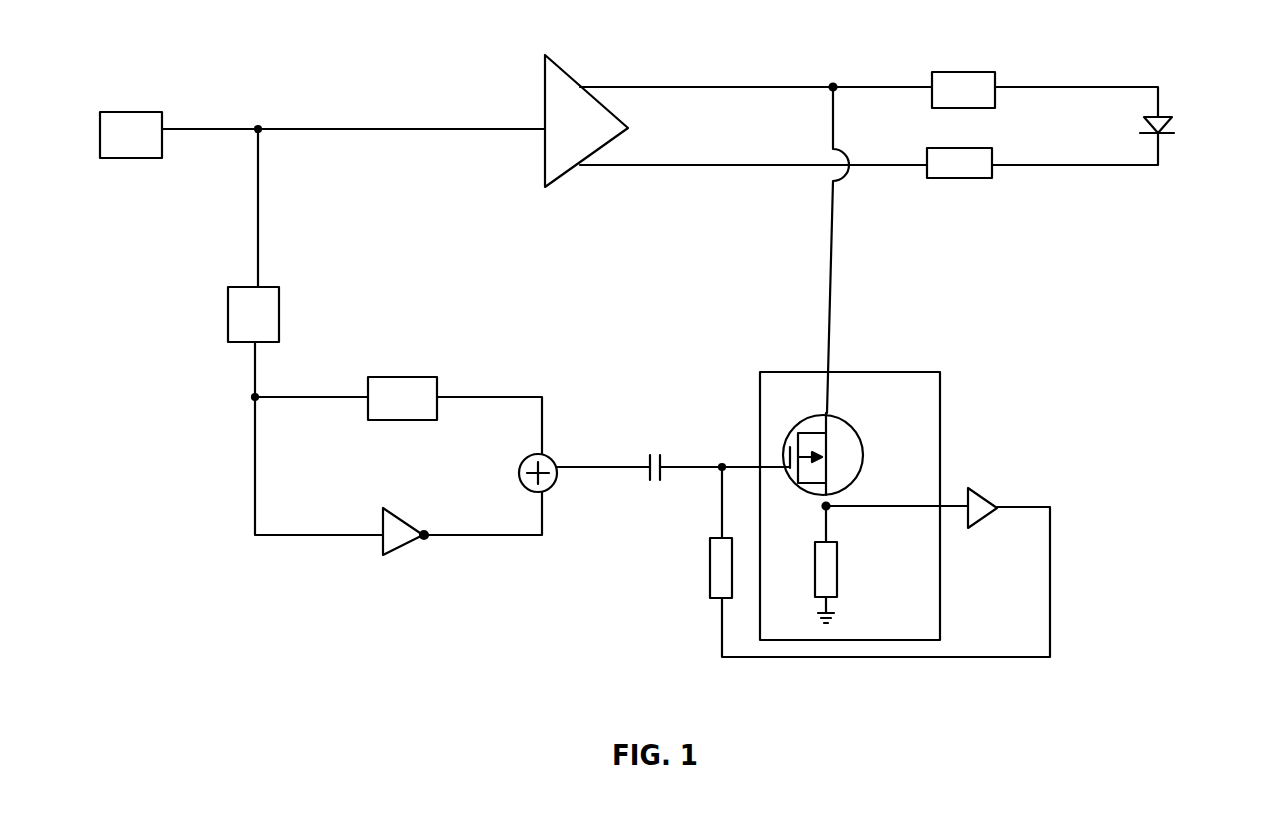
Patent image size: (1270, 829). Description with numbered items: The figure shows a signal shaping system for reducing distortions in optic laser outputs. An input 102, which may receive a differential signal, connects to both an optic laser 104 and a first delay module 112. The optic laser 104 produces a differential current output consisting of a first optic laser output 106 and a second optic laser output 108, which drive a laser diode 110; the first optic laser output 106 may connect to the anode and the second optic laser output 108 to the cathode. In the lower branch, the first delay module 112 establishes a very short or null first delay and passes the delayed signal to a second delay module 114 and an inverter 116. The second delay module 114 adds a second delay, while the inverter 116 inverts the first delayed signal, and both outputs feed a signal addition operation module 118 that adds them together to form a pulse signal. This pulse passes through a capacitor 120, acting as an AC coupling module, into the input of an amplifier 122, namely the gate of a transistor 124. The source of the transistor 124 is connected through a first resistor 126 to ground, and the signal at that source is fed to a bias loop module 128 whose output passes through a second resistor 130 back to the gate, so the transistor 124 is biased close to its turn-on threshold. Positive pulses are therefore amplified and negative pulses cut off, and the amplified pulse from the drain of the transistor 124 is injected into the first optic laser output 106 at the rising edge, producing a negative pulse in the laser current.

The input 102 is at (140, 112).
The optic laser 104 is at (573, 75).
The first optic laser output 106 is at (980, 72).
The second optic laser output 108 is at (965, 178).
The laser diode 110 is at (1160, 118).
The first delay module 112 is at (279, 318).
The second delay module 114 is at (405, 377).
The inverter 116 is at (405, 547).
The signal addition operation module 118 is at (551, 459).
The capacitor 120 is at (648, 478).
The amplifier 122 is at (935, 372).
The transistor 124 is at (863, 450).
The first resistor 126 is at (837, 575).
The bias loop module 128 is at (990, 500).
The second resistor 130 is at (710, 570).